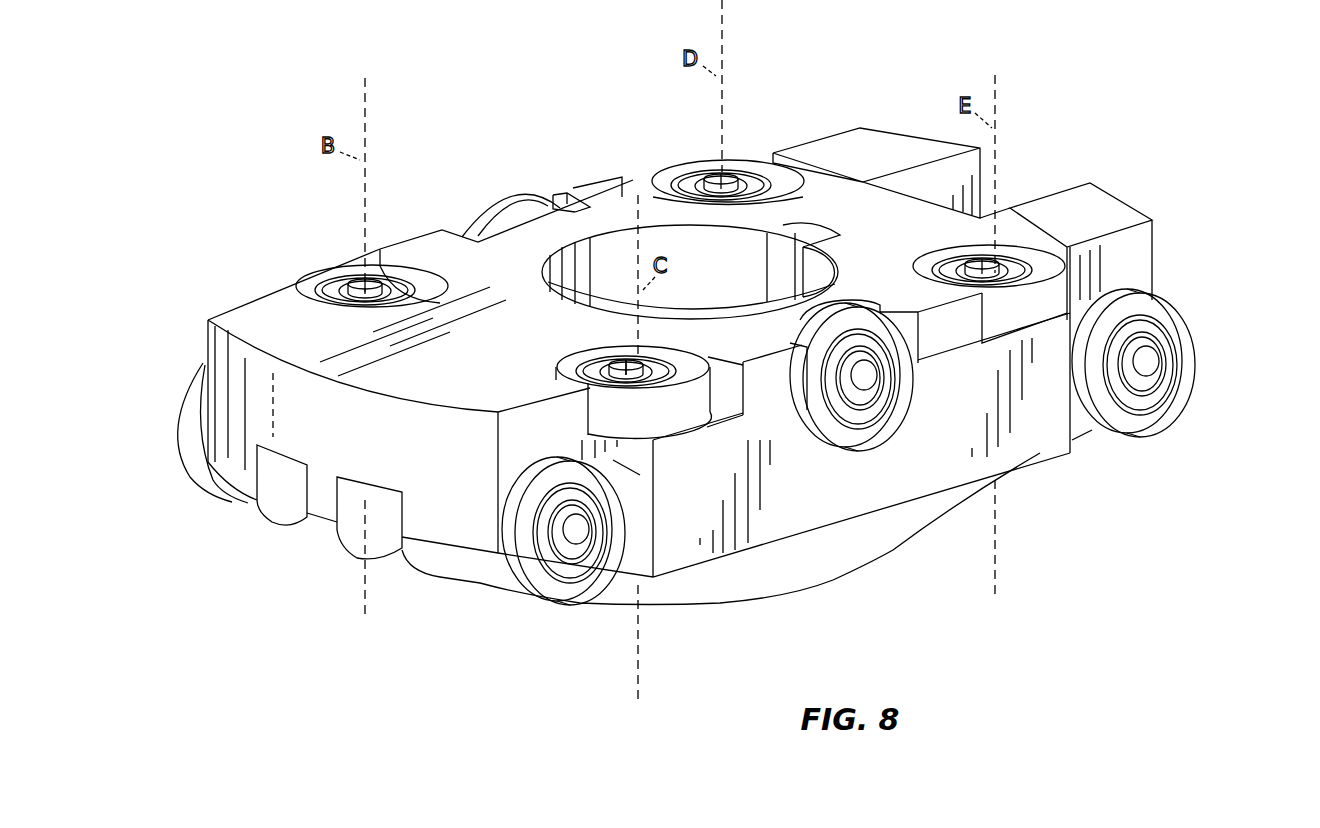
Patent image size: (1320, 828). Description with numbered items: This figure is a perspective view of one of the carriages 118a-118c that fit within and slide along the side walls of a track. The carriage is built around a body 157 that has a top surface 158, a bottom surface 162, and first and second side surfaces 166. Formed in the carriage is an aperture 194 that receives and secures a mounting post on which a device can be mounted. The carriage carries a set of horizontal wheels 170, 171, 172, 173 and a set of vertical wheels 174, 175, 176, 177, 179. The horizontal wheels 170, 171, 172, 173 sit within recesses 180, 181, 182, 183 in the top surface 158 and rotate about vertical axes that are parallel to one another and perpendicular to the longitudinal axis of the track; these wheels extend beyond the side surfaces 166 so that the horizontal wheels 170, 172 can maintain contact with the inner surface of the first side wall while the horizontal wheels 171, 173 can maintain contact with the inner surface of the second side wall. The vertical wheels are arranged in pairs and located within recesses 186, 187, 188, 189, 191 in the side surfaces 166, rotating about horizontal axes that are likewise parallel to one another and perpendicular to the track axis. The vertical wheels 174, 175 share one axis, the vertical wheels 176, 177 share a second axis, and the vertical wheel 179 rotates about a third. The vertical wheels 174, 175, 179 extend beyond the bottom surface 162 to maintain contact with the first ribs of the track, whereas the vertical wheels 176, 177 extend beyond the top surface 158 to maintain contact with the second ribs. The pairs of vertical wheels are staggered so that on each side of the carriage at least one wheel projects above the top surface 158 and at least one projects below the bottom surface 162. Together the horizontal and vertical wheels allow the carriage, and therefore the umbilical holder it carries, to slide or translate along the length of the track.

The carriages 118a-118c is at (487, 112).
The body 157 is at (232, 387).
The top surface 158 is at (848, 165).
The bottom surface 162 is at (458, 590).
The side surfaces 166 is at (830, 490).
The horizontal wheel 170 is at (313, 267).
The horizontal wheel 171 is at (683, 435).
The horizontal wheel 172 is at (683, 167).
The horizontal wheel 173 is at (1030, 303).
The vertical wheel 174 is at (197, 475).
The vertical wheel 175 is at (567, 593).
The vertical wheel 176 is at (492, 210).
The vertical wheel 177 is at (880, 415).
The vertical wheel 179 is at (1178, 330).
The recess 180 is at (398, 258).
The recess 181 is at (707, 360).
The recess 182 is at (773, 163).
The recess 183 is at (1033, 247).
The recess 186 is at (213, 358).
The recess 187 is at (613, 460).
The recess 188 is at (567, 192).
The recess 189 is at (920, 323).
The recess 191 is at (1133, 275).
The aperture 194 is at (613, 268).